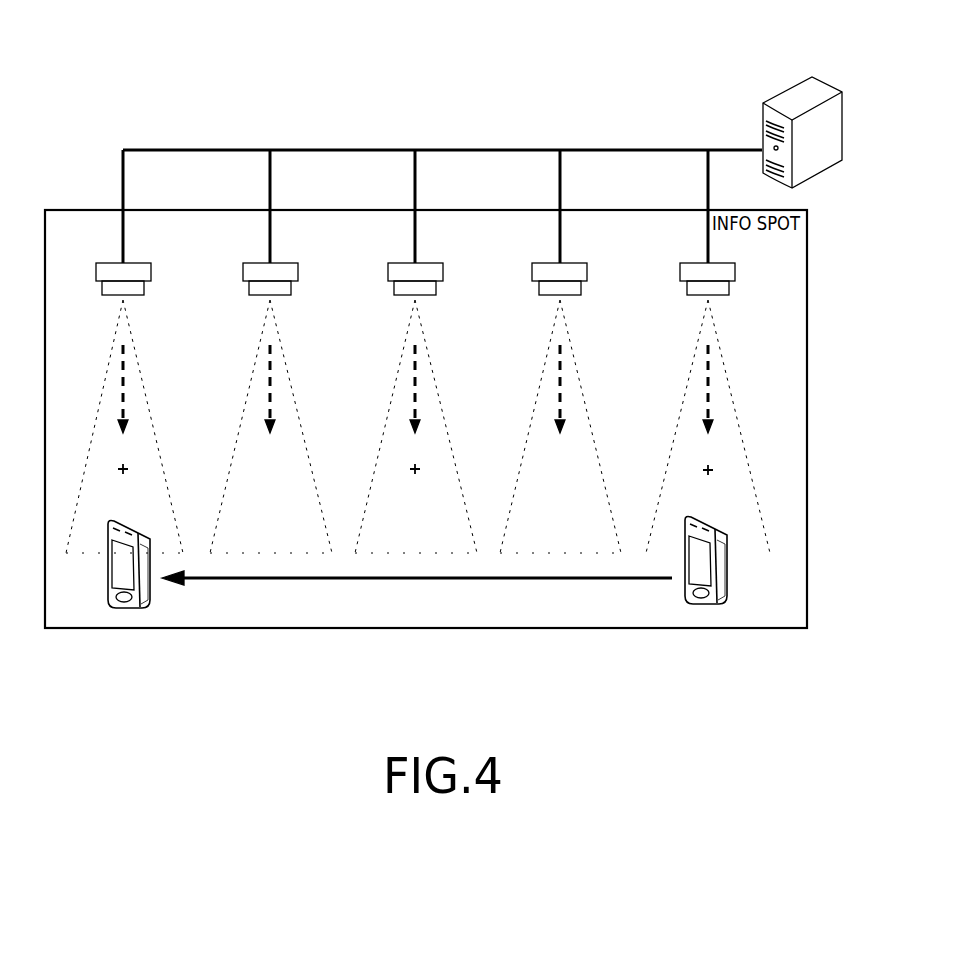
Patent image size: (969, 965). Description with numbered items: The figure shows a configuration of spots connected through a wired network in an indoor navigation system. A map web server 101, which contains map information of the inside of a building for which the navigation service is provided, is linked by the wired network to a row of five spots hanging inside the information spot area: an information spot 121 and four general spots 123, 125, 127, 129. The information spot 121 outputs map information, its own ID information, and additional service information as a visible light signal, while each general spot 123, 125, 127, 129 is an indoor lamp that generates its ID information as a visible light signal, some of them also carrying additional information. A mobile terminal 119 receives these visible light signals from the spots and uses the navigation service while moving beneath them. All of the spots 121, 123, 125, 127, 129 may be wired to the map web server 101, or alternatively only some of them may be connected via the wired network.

The map web server 101 is at (782, 92).
The mobile terminal 119 is at (728, 570).
The information spot 121 is at (730, 288).
The general spot 123 is at (582, 288).
The general spot 125 is at (437, 288).
The general spot 127 is at (292, 288).
The general spot 129 is at (145, 288).